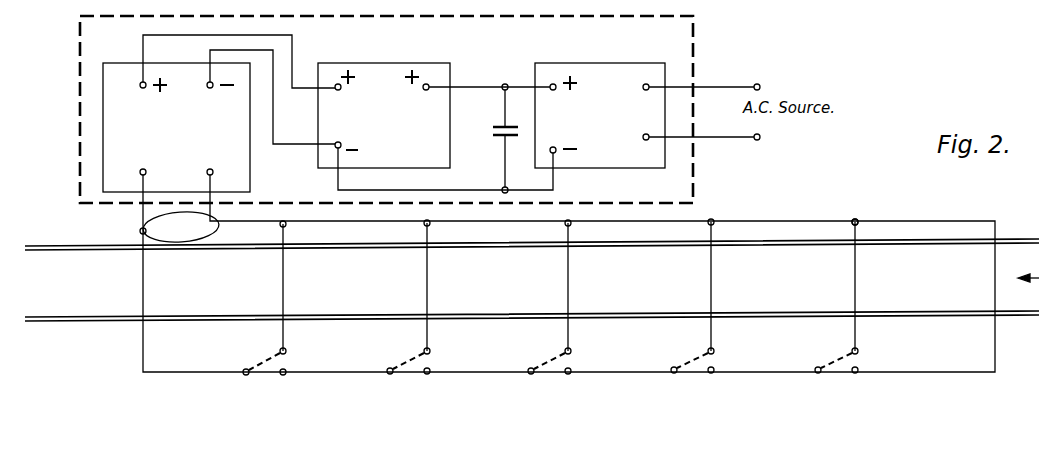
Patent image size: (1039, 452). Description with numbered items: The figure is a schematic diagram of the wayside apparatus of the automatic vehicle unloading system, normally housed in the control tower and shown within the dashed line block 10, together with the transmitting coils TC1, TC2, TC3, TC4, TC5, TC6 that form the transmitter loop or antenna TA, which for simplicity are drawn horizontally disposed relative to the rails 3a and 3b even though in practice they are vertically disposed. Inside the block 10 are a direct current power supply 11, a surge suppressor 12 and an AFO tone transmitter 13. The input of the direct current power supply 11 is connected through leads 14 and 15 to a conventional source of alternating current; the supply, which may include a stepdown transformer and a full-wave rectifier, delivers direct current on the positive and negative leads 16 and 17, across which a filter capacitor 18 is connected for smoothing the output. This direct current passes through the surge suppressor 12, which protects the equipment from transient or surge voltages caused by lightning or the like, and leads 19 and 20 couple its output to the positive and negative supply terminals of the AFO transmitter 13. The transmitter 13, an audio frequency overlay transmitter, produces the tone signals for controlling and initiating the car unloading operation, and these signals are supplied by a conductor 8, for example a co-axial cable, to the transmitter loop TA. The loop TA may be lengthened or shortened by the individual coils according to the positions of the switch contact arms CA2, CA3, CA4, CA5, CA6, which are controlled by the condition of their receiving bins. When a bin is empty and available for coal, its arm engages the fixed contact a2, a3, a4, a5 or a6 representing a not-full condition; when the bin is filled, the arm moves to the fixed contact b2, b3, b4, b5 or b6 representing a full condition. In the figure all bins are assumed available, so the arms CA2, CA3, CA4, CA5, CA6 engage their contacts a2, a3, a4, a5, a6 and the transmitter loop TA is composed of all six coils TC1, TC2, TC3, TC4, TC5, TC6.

The conductor 8 is at (136, 226).
The dashed line block 10 is at (693, 40).
The direct current power supply 11 is at (607, 63).
The surge suppressor 12 is at (428, 63).
The AFO tone transmitter 13 is at (110, 63).
The lead 14 is at (730, 85).
The lead 15 is at (733, 140).
The positive lead 16 is at (507, 84).
The negative lead 17 is at (553, 190).
The filter capacitor 18 is at (496, 137).
The lead 19 is at (301, 85).
The lead 20 is at (296, 145).
The rail 3a is at (47, 317).
The rail 3b is at (55, 246).
The transmitter loop TA is at (872, 216).
The transmitting coil TC1 is at (194, 280).
The transmitting coil TC2 is at (317, 286).
The transmitting coil TC3 is at (461, 285).
The transmitting coil TC4 is at (605, 285).
The transmitting coil TC5 is at (745, 285).
The transmitting coil TC6 is at (888, 285).
The fixed contact b2 is at (297, 344).
The fixed contact a2 is at (285, 370).
The switch contact arm CA2 is at (265, 374).
The fixed contact b3 is at (441, 344).
The fixed contact a3 is at (429, 370).
The switch contact arm CA3 is at (411, 374).
The fixed contact b4 is at (582, 344).
The fixed contact a4 is at (570, 370).
The switch contact arm CA4 is at (552, 374).
The fixed contact b5 is at (725, 344).
The fixed contact a5 is at (713, 370).
The switch contact arm CA5 is at (695, 374).
The fixed contact b6 is at (869, 344).
The fixed contact a6 is at (857, 370).
The switch contact arm CA6 is at (839, 374).